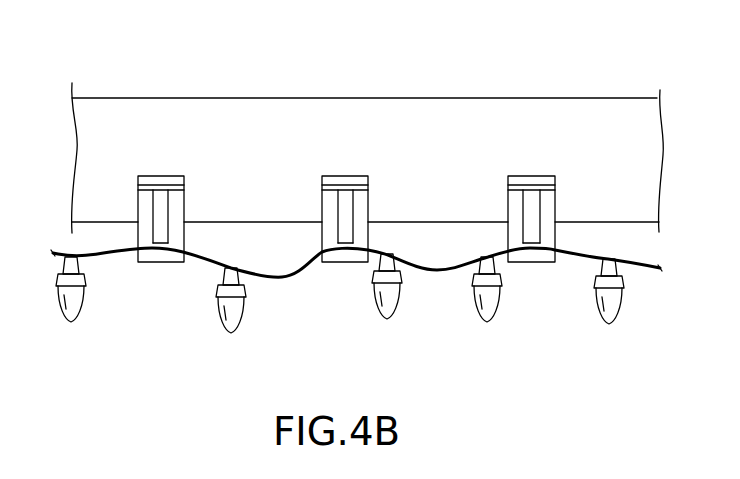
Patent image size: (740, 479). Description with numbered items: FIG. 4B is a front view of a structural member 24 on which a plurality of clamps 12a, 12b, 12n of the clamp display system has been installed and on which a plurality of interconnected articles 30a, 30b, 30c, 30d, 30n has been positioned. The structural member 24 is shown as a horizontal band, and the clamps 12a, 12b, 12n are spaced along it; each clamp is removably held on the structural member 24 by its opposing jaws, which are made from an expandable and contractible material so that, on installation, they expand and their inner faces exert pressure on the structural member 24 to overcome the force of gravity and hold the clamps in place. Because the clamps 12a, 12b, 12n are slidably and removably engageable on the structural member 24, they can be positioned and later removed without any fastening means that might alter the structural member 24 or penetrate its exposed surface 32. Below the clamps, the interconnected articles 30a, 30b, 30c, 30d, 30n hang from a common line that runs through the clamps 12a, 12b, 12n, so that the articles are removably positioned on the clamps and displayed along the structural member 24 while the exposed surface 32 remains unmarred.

The structural member 24 is at (160, 98).
The exposed surface 32 is at (395, 112).
The clamp 12a is at (172, 176).
The clamp 12b is at (352, 176).
The clamp 12n is at (532, 176).
The article 30a is at (82, 309).
The article 30b is at (243, 316).
The article 30c is at (397, 307).
The article 30d is at (497, 310).
The article 30n is at (619, 312).